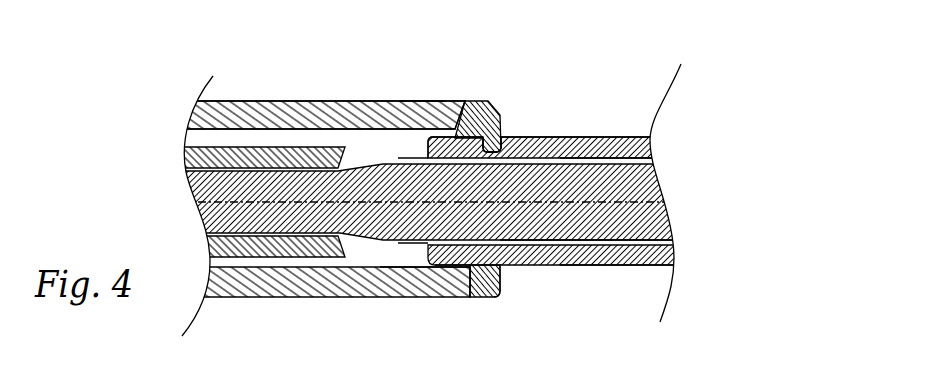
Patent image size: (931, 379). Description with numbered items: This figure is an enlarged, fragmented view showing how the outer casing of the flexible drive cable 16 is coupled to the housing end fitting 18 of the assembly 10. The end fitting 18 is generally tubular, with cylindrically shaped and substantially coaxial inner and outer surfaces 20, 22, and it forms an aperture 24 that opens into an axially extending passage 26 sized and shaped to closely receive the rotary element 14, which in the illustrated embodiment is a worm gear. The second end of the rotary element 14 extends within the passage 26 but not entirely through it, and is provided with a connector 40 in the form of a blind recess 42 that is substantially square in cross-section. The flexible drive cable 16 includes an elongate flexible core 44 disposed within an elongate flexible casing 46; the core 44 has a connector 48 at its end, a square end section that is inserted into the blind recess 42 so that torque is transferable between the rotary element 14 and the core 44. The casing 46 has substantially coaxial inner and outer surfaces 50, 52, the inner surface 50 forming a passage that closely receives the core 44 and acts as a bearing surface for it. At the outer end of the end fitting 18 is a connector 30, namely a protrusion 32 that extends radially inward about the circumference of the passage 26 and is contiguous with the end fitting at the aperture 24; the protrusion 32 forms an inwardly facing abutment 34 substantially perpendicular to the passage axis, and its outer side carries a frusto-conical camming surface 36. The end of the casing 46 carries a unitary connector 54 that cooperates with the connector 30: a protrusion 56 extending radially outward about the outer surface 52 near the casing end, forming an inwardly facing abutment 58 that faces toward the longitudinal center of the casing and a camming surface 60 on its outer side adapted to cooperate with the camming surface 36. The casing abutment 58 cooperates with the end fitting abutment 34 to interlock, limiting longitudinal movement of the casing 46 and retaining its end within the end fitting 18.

The fiber optic connector assembly 10 is at (552, 63).
The rotary element 14 is at (273, 258).
The flexible drive cable 16 is at (577, 137).
The end fitting 18 is at (370, 101).
The inner surface 20 is at (418, 103).
The outer surface 22 is at (271, 101).
The aperture 24 is at (503, 260).
The passage 26 is at (371, 262).
The connector 30 is at (503, 129).
The protrusion 32 is at (493, 152).
The abutment 34 is at (463, 266).
The camming surface 36 is at (500, 262).
The connector 40 is at (212, 212).
The blind recess 42 is at (200, 200).
The core 44 is at (646, 148).
The casing 46 is at (593, 136).
The connector 48 is at (196, 158).
The inner surface 50 is at (655, 239).
The outer surface 52 is at (634, 264).
The connector 54 is at (473, 102).
The protrusion 56 is at (428, 268).
The abutment 58 is at (482, 297).
The camming surface 60 is at (410, 268).